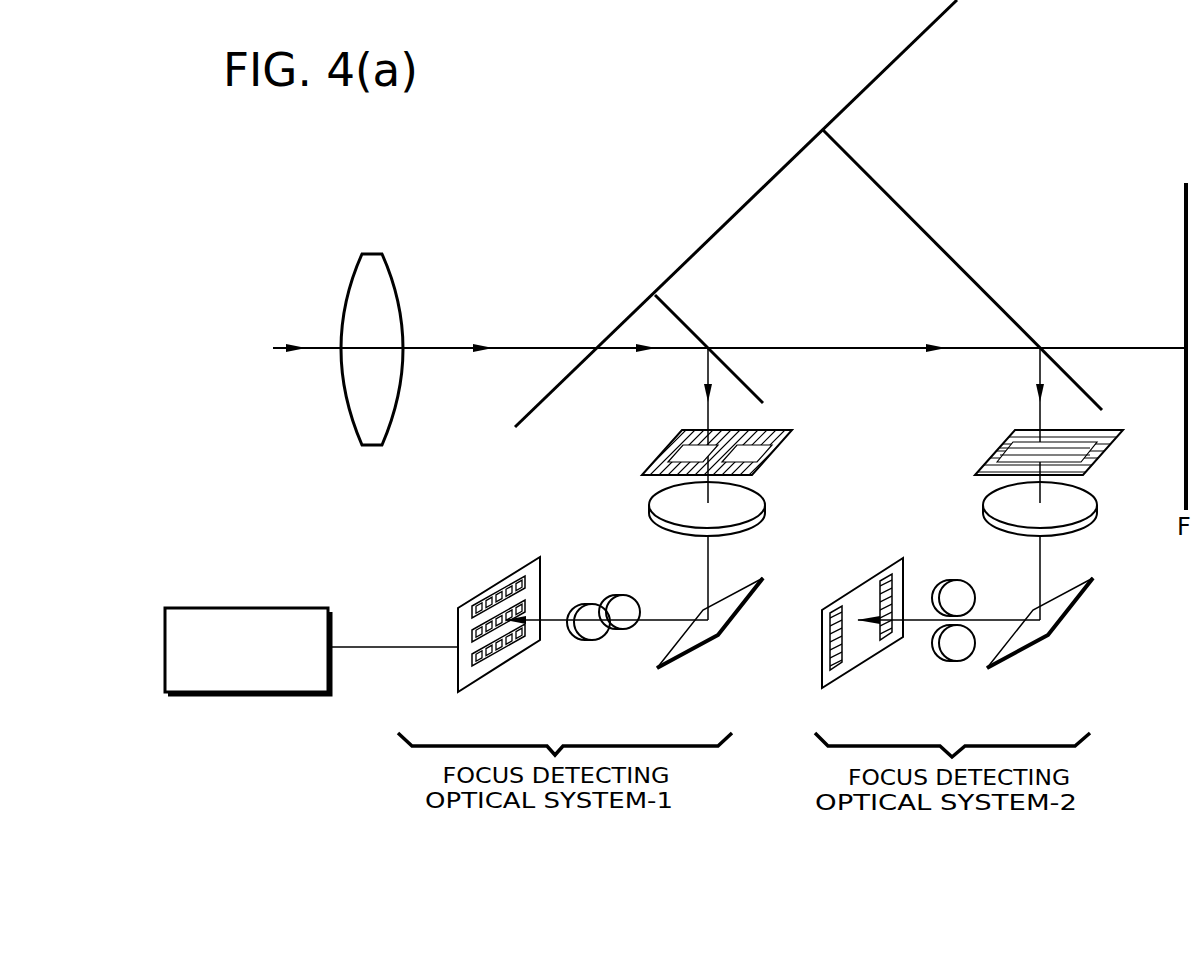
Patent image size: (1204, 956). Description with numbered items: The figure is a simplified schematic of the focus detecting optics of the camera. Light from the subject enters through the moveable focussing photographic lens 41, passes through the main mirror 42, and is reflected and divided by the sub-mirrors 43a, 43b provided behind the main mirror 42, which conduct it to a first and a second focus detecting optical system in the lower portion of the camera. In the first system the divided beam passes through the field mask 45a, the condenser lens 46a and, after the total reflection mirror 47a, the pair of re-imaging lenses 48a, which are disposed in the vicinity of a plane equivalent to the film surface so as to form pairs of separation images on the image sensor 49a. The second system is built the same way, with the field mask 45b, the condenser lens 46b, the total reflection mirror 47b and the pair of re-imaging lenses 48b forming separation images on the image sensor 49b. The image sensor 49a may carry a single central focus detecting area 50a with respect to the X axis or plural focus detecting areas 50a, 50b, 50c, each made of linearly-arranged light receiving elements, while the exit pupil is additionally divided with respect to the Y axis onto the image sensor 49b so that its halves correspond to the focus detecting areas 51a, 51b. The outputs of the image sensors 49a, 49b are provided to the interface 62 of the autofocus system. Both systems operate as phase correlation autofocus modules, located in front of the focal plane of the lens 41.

The photographic lens 41 is at (403, 300).
The main mirror 42 is at (928, 27).
The sub-mirror 43a is at (682, 318).
The sub-mirror 43b is at (998, 302).
The field mask 45a is at (790, 432).
The field mask 45b is at (1012, 438).
The condenser lens 46a is at (752, 505).
The condenser lens 46b is at (992, 503).
The total reflection mirror 47a is at (697, 640).
The total reflection mirror 47b is at (1072, 622).
The pair of re-imaging lenses 48a is at (624, 629).
The pair of re-imaging lenses 48b is at (940, 600).
The image sensor 49a is at (458, 680).
The image sensor 49b is at (860, 668).
The focus detecting area 50a is at (462, 630).
The focus detecting area 50b is at (500, 580).
The focus detecting area 50c is at (498, 660).
The focus detecting area 51a is at (822, 652).
The focus detecting area 51b is at (896, 585).
The interface 62 is at (298, 608).